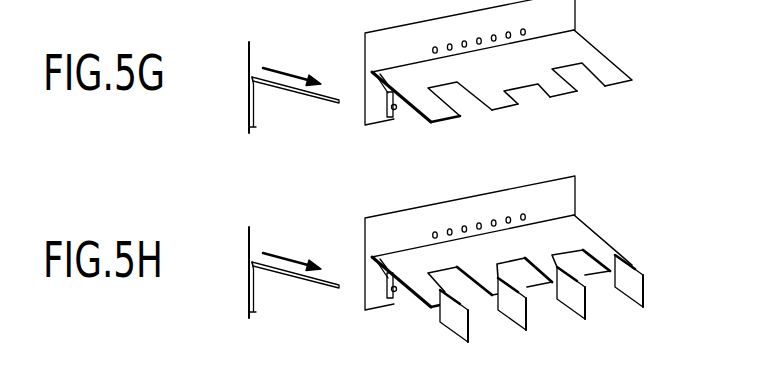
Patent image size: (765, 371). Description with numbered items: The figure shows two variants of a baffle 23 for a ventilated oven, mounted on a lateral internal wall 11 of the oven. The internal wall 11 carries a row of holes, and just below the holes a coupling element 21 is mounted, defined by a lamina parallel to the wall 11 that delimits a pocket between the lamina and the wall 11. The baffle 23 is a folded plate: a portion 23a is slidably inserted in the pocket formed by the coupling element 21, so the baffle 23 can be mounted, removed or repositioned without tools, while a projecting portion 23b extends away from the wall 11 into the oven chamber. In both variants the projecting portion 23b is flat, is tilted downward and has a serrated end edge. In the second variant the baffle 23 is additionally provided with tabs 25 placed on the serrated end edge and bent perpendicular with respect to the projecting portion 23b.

In FIG. 5G, the lateral internal wall 11 is at (385, 47).
In FIG. 5H, the lateral internal wall 11 is at (379, 233).
In FIG. 5G, the coupling element 21 is at (403, 113).
In FIG. 5H, the coupling element 21 is at (402, 297).
In FIG. 5G, the baffle 23 is at (527, 91).
In FIG. 5H, the baffle 23 is at (532, 230).
In FIG. 5G, the inserted portion 23a is at (387, 92).
In FIG. 5H, the inserted portion 23a is at (385, 272).
In FIG. 5G, the projecting portion 23b is at (508, 91).
In FIG. 5H, the projecting portion 23b is at (573, 235).
In FIG. 5H, the tab 25 is at (468, 327).